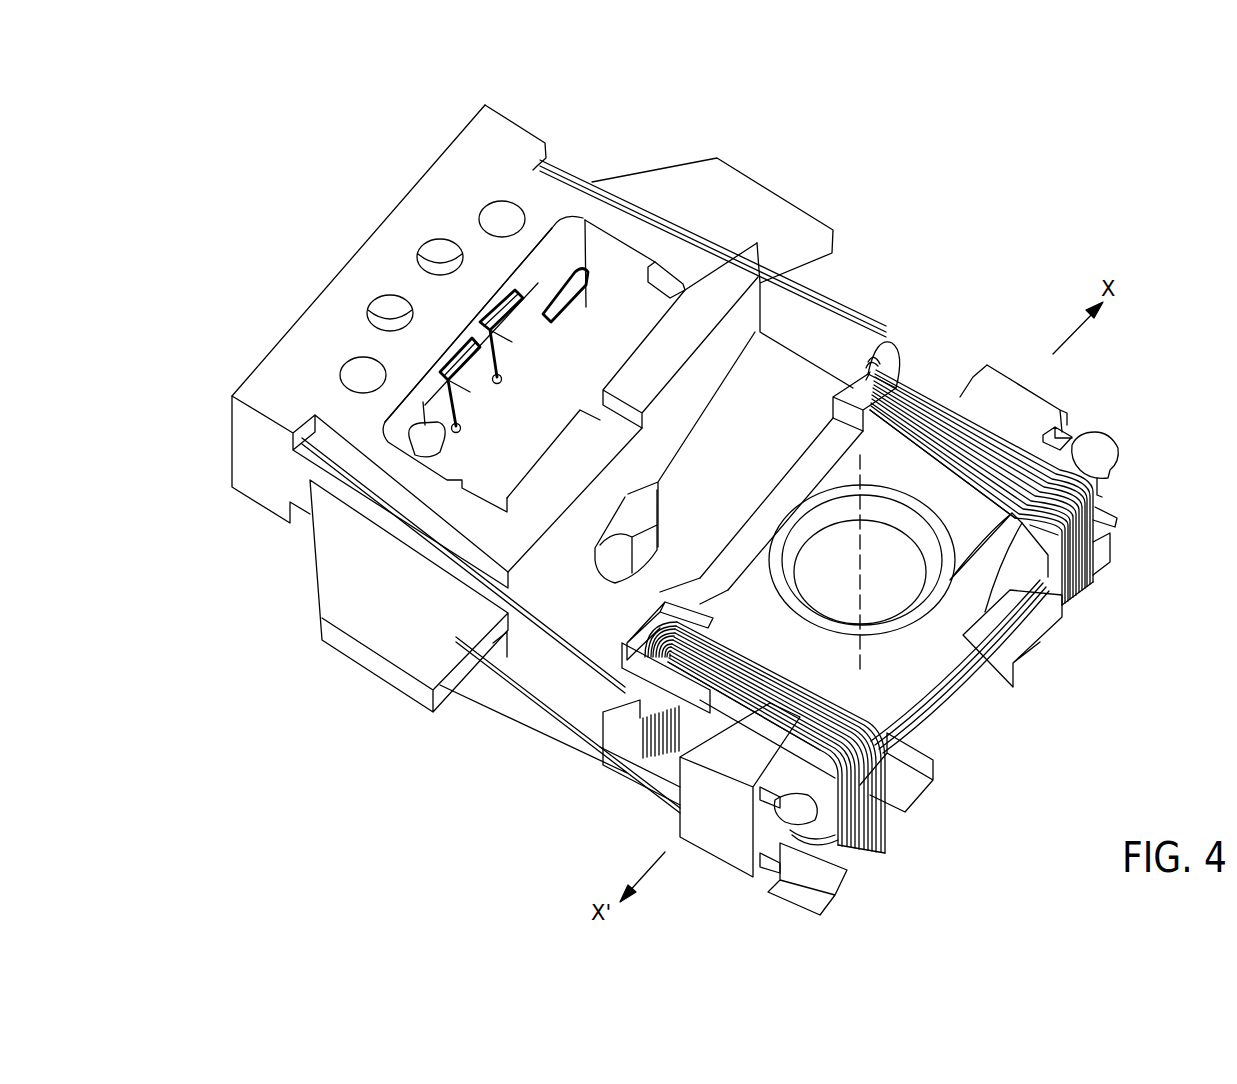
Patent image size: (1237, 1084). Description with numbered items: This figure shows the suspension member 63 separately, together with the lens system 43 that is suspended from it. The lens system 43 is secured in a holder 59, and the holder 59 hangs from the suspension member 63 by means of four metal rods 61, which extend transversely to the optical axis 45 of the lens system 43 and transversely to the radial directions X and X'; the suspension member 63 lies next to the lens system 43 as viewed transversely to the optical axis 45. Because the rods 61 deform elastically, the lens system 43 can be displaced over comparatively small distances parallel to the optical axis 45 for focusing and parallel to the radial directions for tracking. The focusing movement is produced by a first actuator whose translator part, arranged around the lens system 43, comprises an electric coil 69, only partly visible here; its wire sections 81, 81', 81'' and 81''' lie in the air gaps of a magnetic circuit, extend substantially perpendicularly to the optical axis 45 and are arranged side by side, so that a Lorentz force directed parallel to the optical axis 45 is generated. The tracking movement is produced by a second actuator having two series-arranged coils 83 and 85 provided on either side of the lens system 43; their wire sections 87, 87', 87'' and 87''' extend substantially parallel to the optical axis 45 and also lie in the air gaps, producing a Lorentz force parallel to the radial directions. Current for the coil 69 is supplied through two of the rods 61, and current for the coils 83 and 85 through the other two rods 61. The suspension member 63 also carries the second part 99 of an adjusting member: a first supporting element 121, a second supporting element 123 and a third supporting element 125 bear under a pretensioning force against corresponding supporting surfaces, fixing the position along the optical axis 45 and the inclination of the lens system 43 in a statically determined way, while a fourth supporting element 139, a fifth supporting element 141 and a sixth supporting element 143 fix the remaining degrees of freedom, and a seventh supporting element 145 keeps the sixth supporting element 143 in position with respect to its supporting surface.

The second part of the adjusting member 99 is at (602, 365).
The seventh supporting element 145 is at (668, 288).
The third supporting element 125 is at (757, 225).
The metal rods 61 is at (873, 310).
The wire section 87''' is at (900, 336).
The lens system 43 is at (870, 560).
The wire section 81'' is at (800, 466).
The coil 85 is at (963, 447).
The wire section 87'' is at (1062, 470).
The wire section 81' is at (990, 666).
The electric coil 69 is at (1033, 657).
The holder 59 is at (937, 630).
The wire section 81 is at (910, 773).
The wire section 87 is at (807, 809).
The coil 83 is at (733, 667).
The wire section 87' is at (653, 657).
The optical axis 45 is at (858, 663).
The first supporting element 121 is at (643, 543).
The fourth supporting element 139 is at (530, 468).
The fifth supporting element 141 is at (611, 371).
The sixth supporting element 143 is at (470, 500).
The suspension member 63 is at (397, 463).
The second supporting element 123 is at (400, 637).
The wire section 81''' is at (610, 752).